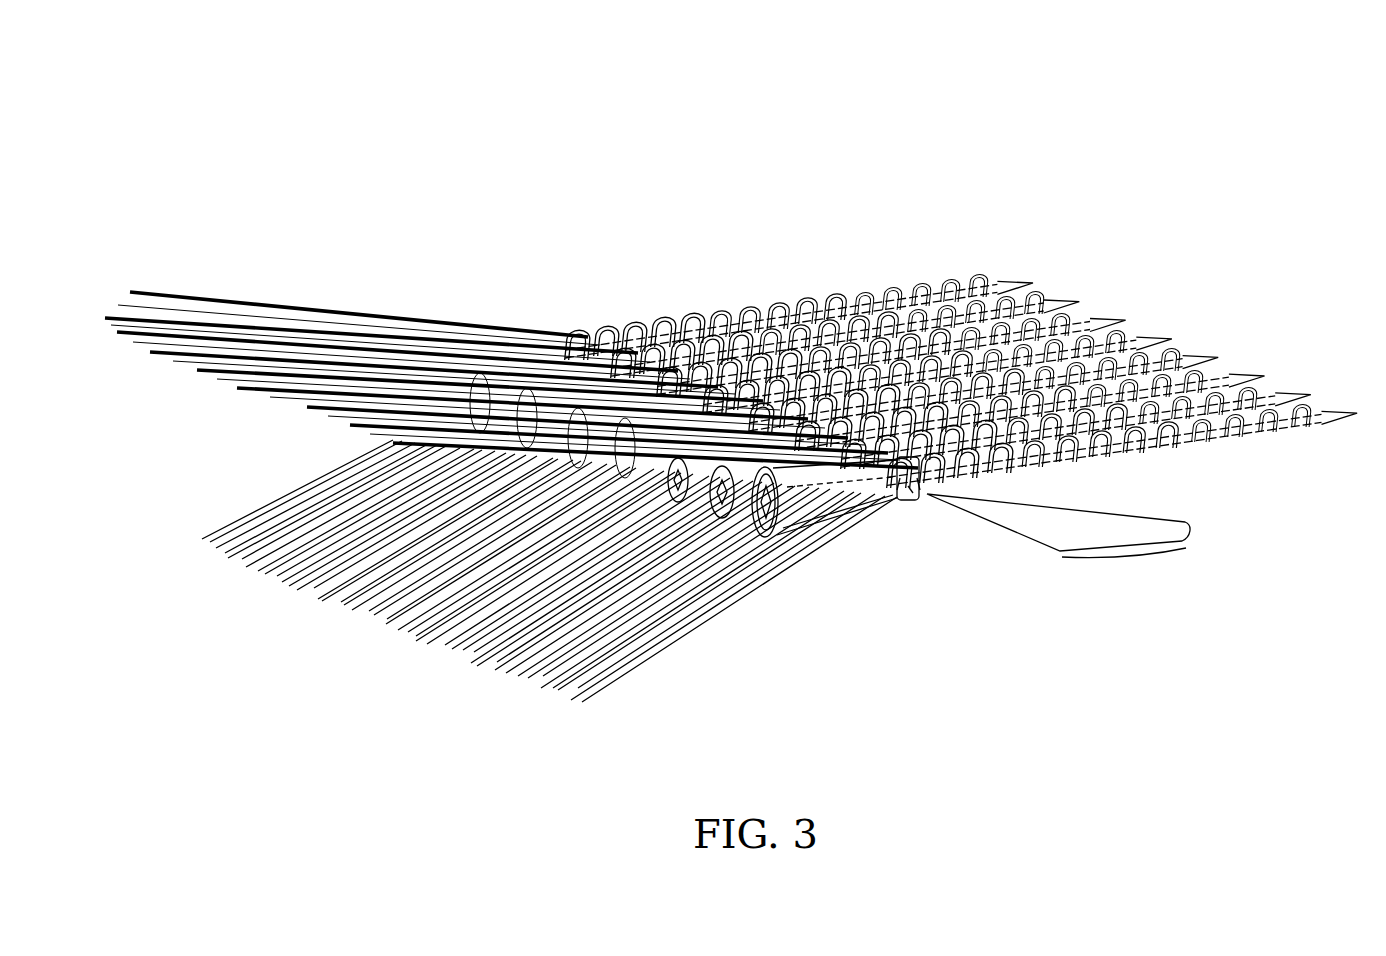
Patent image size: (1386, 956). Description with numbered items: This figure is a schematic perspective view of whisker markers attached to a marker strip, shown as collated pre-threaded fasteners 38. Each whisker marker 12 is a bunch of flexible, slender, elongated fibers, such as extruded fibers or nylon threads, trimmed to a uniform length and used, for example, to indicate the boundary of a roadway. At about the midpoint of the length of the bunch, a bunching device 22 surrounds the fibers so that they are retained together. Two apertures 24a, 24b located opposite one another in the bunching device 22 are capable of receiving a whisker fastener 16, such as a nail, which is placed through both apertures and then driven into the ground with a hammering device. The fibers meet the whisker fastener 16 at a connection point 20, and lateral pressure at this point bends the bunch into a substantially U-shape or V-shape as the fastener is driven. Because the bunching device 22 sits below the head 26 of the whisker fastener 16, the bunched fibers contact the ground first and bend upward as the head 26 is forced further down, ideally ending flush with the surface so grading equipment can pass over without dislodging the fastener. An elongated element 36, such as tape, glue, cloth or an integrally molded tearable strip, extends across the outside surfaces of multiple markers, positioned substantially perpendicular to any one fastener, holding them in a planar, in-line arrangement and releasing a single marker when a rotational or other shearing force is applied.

The whisker marker 12 is at (635, 668).
The whisker fastener 16 is at (1190, 458).
The connection point 20 is at (907, 503).
The bunching device 22 is at (913, 493).
The aperture 24a is at (897, 490).
The aperture 24b is at (920, 490).
The head of the whisker fastener 26 is at (772, 522).
The elongated element 36 is at (1110, 555).
The collated pre-threaded fasteners 38 is at (1013, 212).